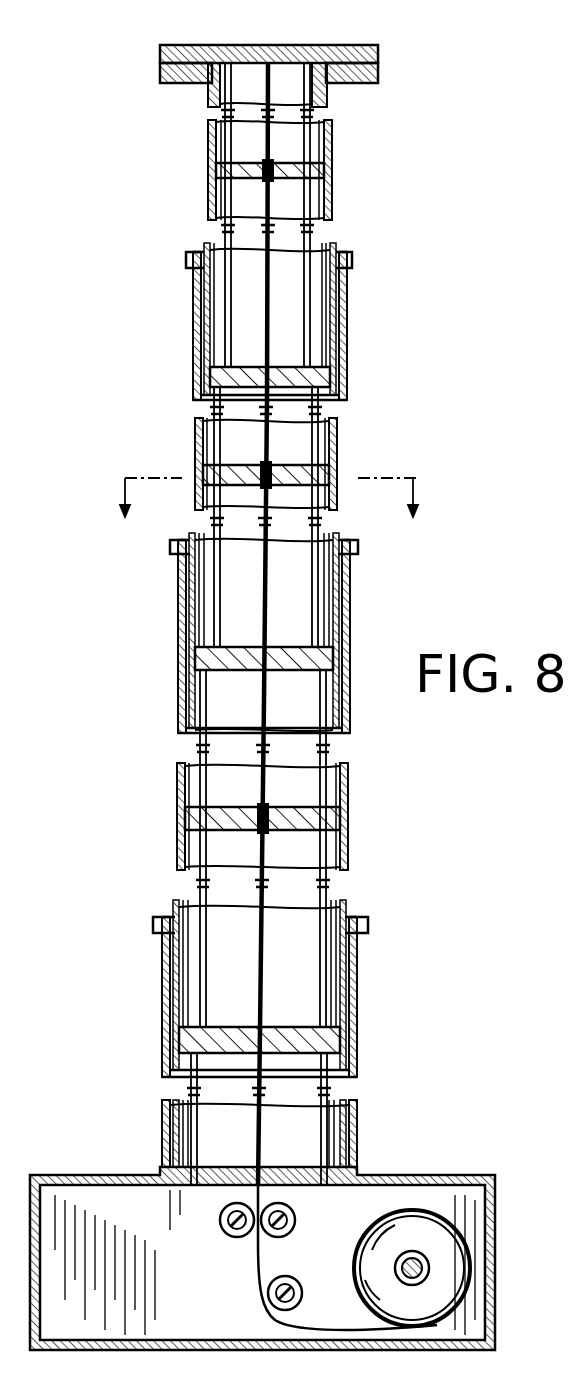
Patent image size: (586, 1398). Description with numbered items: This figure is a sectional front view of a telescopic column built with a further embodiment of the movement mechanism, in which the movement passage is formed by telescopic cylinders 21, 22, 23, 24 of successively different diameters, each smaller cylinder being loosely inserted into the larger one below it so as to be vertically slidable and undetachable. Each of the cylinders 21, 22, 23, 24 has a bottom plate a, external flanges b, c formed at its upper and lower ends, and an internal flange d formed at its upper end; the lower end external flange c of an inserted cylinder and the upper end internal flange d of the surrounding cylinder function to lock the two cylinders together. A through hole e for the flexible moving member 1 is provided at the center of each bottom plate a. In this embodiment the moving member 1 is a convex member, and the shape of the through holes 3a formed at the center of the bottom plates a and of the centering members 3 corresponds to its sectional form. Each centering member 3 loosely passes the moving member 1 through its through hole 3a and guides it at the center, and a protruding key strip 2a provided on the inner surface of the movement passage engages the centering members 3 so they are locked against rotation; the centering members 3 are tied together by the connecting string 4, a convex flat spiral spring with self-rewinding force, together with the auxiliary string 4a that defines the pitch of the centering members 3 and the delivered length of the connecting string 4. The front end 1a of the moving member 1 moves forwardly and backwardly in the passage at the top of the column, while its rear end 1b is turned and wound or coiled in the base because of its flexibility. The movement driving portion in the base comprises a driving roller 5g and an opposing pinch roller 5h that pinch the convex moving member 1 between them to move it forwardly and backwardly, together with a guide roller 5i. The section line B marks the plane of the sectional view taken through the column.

The moving member 1 is at (313, 308).
The front end 1a is at (275, 72).
The rear end 1b is at (471, 1270).
The protruding key strip 2a is at (333, 157).
The centering member 3 is at (297, 160).
The through hole 3a is at (265, 160).
The connecting string 4 is at (202, 295).
The auxiliary string 4a is at (200, 345).
The telescopic cylinder 21 is at (357, 1122).
The telescopic cylinder 22 is at (347, 790).
The telescopic cylinder 23 is at (340, 432).
The telescopic cylinder 24 is at (333, 205).
The driving roller 5g is at (237, 1238).
The pinch roller 5h is at (297, 1223).
The guide roller 5i is at (302, 1297).
The bottom plate a is at (245, 375).
The external flange b is at (188, 262).
The external flange c is at (330, 373).
The internal flange d is at (205, 250).
The through hole e is at (270, 368).
The section line B- B is at (267, 513).